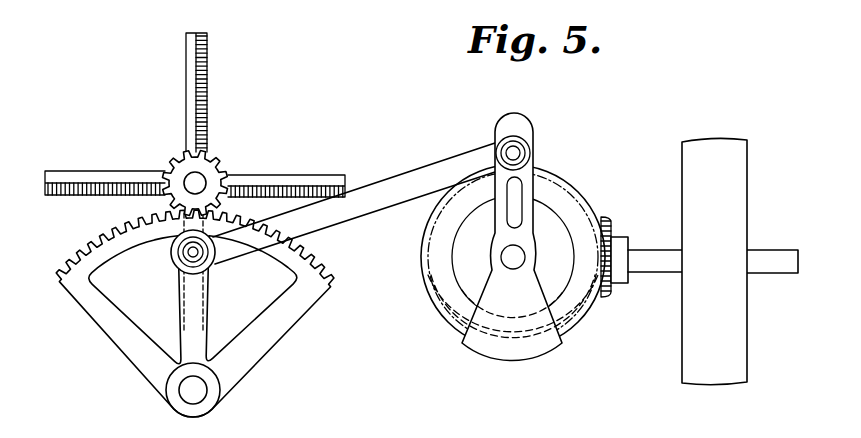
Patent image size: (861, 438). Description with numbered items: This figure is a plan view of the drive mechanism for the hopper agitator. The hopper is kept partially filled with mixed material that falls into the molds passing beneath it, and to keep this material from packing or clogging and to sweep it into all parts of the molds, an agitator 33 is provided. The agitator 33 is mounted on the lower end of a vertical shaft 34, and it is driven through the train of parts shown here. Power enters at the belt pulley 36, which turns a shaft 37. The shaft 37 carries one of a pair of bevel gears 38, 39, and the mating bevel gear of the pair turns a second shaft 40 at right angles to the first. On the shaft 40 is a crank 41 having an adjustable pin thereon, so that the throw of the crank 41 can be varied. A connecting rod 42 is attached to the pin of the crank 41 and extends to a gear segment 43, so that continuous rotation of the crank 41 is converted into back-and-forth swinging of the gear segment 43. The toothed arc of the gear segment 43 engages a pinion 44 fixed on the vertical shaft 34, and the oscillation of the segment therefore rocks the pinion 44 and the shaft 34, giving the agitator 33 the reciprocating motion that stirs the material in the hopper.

The agitator 33 is at (205, 98).
The vertical shaft 34 is at (193, 187).
The belt pulley 36 is at (722, 167).
The shaft 37 is at (660, 262).
The bevel gear 38 is at (612, 228).
The bevel gear 39 is at (437, 253).
The shaft 40 is at (508, 258).
The crank 41 is at (525, 195).
The connecting rod 42 is at (405, 183).
The gear segment 43 is at (87, 238).
The pinion 44 is at (208, 167).